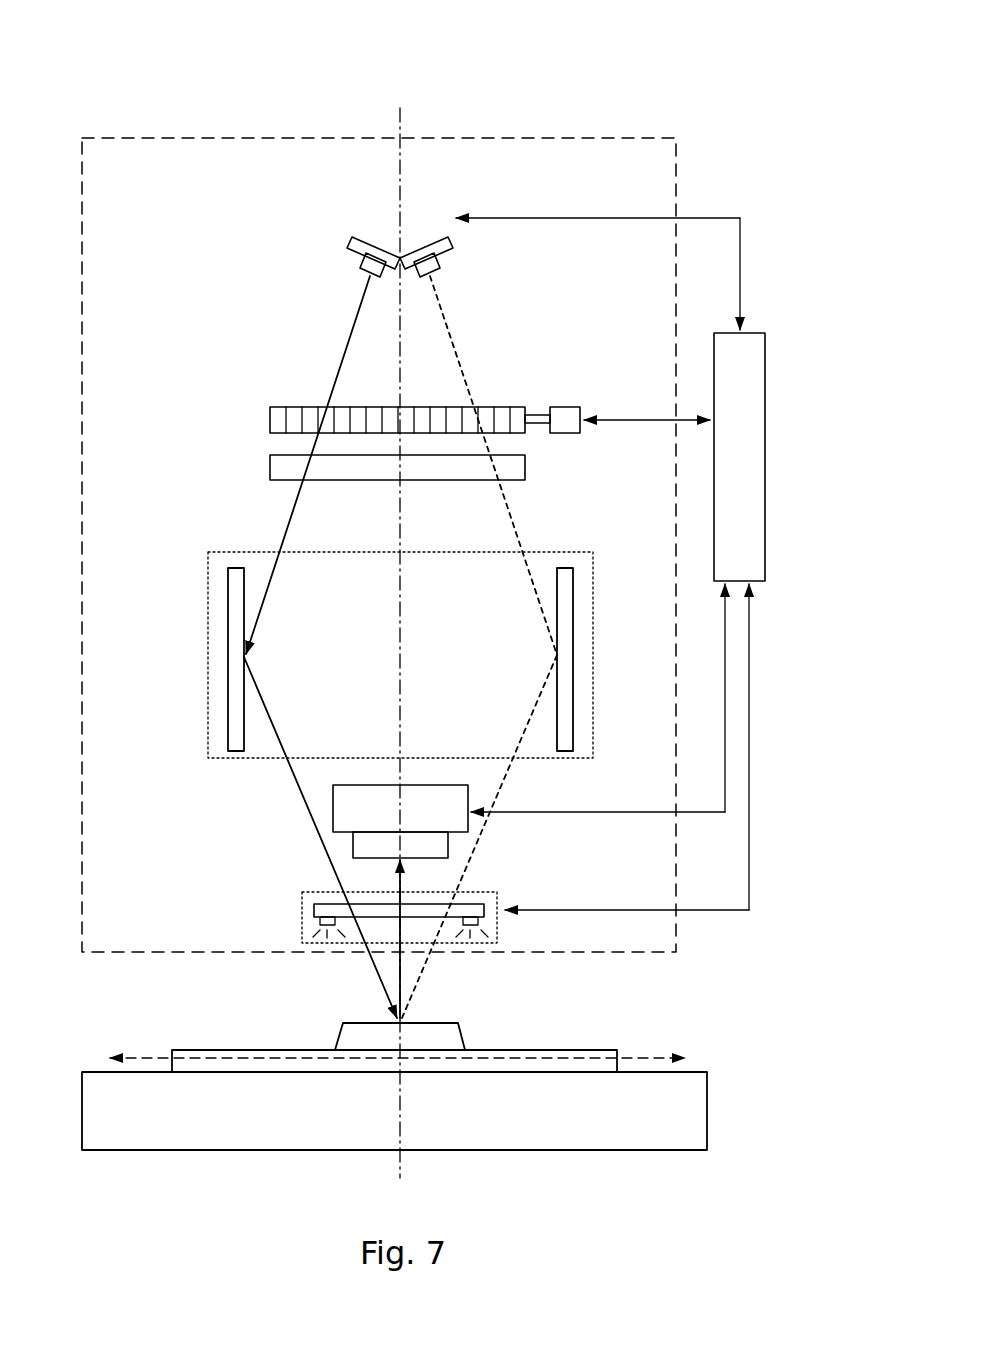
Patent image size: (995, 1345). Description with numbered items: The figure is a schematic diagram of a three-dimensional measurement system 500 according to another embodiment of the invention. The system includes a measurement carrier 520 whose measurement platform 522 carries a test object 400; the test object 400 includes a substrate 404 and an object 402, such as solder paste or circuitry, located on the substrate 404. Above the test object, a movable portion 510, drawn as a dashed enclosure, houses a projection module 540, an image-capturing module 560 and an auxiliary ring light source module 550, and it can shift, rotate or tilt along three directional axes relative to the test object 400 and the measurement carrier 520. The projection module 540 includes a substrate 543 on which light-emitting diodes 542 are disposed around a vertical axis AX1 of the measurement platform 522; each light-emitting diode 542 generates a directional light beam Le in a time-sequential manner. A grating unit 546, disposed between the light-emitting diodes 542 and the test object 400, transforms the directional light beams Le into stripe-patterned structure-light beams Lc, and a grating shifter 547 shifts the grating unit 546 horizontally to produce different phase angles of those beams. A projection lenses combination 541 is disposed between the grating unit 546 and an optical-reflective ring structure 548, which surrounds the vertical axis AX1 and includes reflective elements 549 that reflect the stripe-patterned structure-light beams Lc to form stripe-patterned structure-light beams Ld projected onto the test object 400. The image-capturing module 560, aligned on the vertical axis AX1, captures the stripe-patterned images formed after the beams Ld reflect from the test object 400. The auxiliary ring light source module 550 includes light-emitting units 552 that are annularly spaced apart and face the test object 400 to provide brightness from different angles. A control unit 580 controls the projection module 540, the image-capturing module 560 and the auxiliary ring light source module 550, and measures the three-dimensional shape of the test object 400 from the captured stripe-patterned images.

The three-dimensional measurement system 500 is at (233, 95).
The movable portion 510 is at (158, 139).
The vertical axis AX1 is at (399, 128).
The projection module 540 is at (186, 221).
The substrate 543 is at (368, 231).
The light-emitting diodes 542 is at (360, 264).
The directional light beam Le is at (338, 358).
The grating unit 546 is at (376, 406).
The grating shifter 547 is at (572, 406).
The projection lenses combination 541 is at (528, 468).
The stripe-patterned structure-light beams Lc is at (290, 507).
The optical-reflective ring structure 548 is at (593, 700).
The mirror 549 is at (233, 567).
The stripe-patterned structure-light beams Ld is at (266, 708).
The image-capturing module 560 is at (333, 810).
The auxiliary ring light source module 550 is at (497, 892).
The light-emitting units 552 is at (478, 921).
The control unit 580 is at (765, 416).
The test object 400 is at (298, 1002).
The substrate 404 is at (203, 1050).
The object 402 is at (335, 1050).
The measurement carrier 520 is at (737, 1080).
The measurement platform 522 is at (652, 1152).